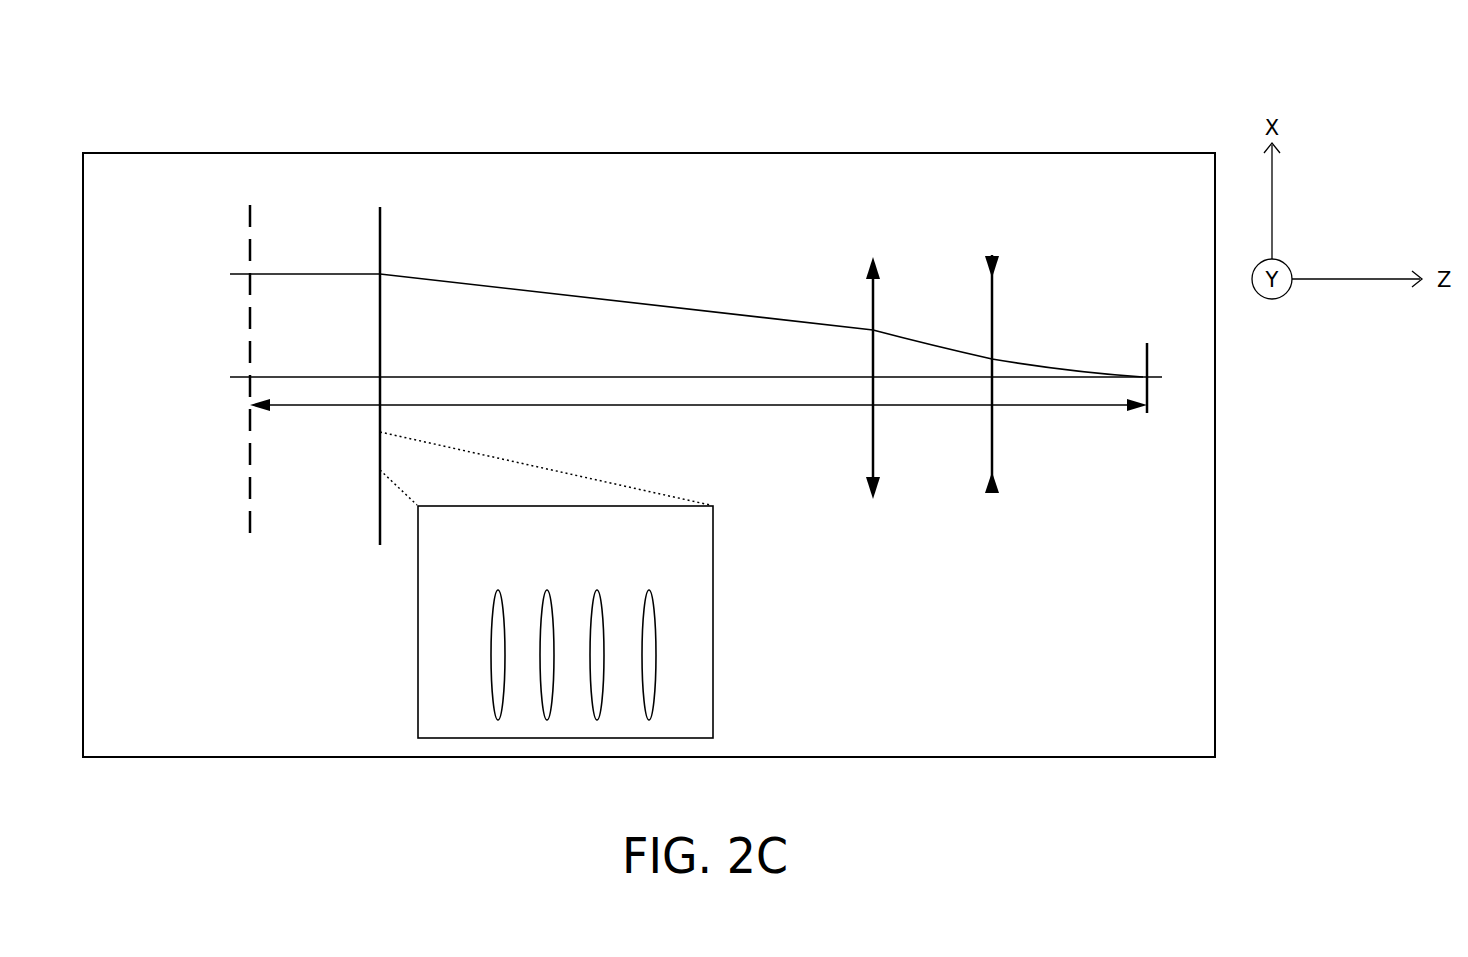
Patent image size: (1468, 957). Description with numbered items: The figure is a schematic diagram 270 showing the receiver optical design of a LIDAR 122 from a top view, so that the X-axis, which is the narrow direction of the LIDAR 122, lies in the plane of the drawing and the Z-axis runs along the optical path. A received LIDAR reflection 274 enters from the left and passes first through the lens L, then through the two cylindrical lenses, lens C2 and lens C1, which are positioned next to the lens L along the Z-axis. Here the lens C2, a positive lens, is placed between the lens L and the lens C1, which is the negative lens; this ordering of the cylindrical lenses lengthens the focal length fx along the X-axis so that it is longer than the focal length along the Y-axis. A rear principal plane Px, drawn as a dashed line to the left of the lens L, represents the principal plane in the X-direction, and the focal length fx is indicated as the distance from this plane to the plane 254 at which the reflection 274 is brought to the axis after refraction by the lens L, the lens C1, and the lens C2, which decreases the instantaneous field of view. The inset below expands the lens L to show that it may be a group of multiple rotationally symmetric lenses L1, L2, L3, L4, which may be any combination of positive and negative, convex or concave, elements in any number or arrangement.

The schematic diagram 270 is at (261, 70).
The LIDAR 122 is at (810, 153).
The received LIDAR reflection 274 is at (527, 290).
The focal plane / image plane 254 is at (1147, 356).
The rear principal plane Px is at (250, 222).
The lens L is at (380, 237).
The cylindrical lens C1 is at (992, 257).
The cylindrical lens C2 is at (873, 257).
The focal length fx is at (725, 405).
The lens L1 is at (498, 590).
The lens L2 is at (547, 590).
The lens L3 is at (597, 590).
The lens L4 is at (649, 590).